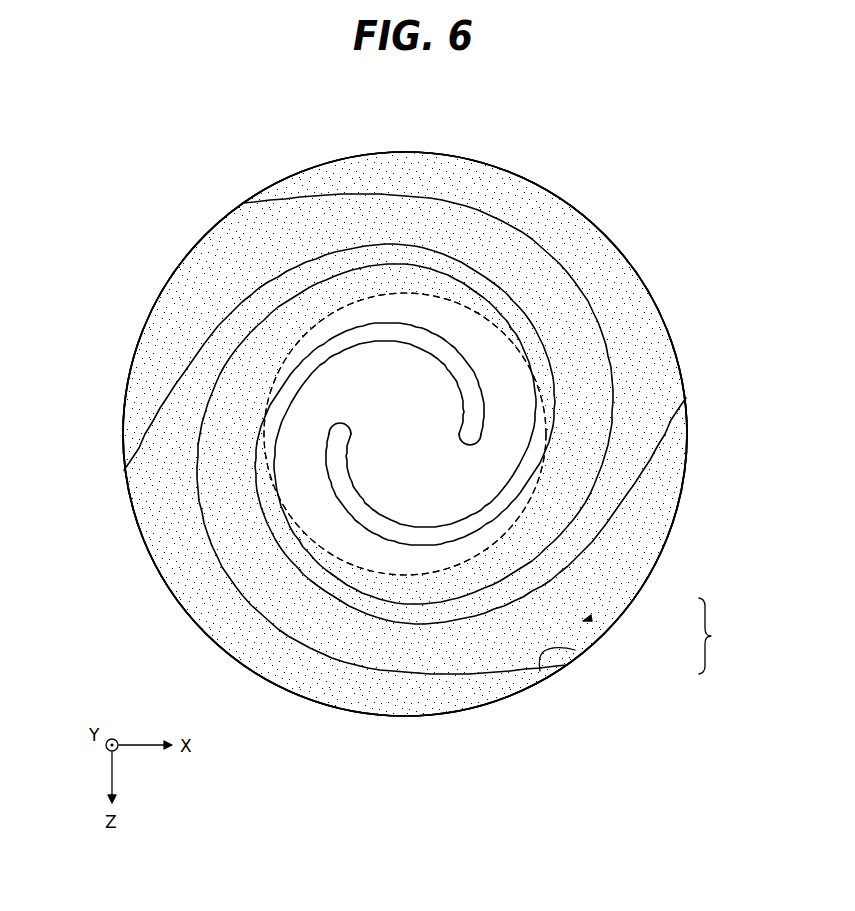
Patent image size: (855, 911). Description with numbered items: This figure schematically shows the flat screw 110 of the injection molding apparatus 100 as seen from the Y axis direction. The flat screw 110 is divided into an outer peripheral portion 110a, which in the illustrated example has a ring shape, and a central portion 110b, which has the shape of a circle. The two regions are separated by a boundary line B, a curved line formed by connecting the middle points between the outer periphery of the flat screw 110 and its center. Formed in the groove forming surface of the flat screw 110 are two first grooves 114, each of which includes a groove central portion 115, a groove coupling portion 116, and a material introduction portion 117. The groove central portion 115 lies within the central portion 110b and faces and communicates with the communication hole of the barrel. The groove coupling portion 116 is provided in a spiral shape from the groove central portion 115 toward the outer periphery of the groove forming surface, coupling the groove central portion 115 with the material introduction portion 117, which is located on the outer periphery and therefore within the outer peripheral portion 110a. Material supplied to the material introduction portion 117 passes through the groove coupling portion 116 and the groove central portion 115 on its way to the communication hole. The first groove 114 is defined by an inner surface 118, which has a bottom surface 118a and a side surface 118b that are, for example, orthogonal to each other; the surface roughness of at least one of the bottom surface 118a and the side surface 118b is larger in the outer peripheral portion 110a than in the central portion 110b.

The device 100 is at (661, 98).
The flat screw 110 is at (606, 165).
The outer peripheral portion 110a is at (259, 252).
The central portion 110b is at (428, 393).
The boundary line B is at (372, 292).
The first groove 114 is at (147, 290).
The groove central portion 115 is at (407, 437).
The groove coupling portion 116 is at (566, 343).
The material introduction portion 117 is at (232, 260).
The inner surface 118 is at (723, 636).
The bottom surface 118a is at (595, 618).
The side surface 118b is at (575, 650).